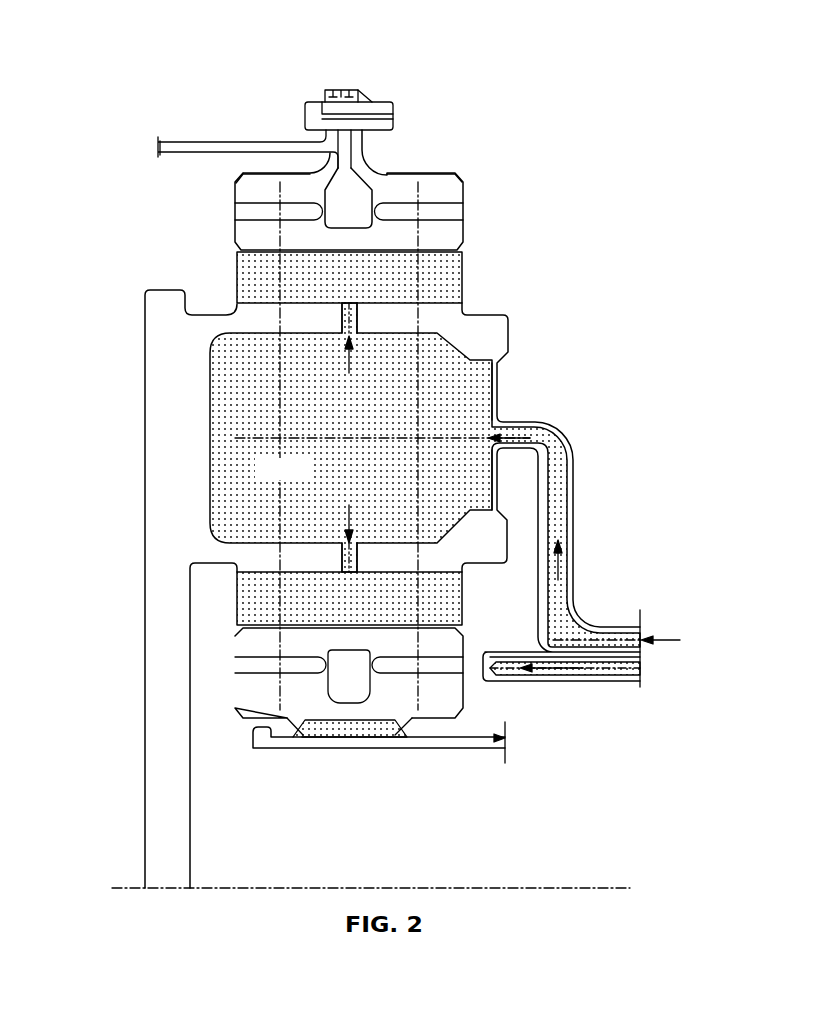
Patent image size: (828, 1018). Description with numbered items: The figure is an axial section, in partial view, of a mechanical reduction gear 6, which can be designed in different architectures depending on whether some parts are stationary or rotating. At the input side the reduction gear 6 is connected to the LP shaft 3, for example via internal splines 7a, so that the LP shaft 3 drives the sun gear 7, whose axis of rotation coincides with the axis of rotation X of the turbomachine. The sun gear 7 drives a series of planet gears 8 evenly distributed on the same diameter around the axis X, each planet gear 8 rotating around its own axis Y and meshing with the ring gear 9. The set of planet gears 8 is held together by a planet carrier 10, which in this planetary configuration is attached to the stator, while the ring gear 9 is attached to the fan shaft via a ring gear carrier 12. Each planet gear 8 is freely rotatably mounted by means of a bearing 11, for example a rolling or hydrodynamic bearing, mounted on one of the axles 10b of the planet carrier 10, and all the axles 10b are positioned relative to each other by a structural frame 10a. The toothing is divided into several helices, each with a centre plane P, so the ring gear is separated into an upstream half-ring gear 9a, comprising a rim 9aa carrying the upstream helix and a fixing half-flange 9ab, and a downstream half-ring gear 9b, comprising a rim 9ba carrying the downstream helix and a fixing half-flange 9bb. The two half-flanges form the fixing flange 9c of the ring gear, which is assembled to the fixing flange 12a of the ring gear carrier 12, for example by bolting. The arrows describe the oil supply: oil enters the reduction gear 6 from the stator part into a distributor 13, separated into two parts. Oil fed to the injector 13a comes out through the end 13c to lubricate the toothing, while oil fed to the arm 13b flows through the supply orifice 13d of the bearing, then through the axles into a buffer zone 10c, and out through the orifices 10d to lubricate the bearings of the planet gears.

The LP shaft 3 is at (470, 748).
The reduction gear 6 is at (597, 257).
The sun gear 7 is at (242, 683).
The internal splines 7a is at (325, 728).
The planet gears 8 is at (242, 650).
The ring gear 9 is at (463, 172).
The upstream half-ring gear 9a is at (248, 188).
The rim of the upstream half-ring gear 9aa is at (258, 182).
The fixing half-flange of the upstream half-ring gear 9ab is at (343, 90).
The downstream half-ring gear 9b is at (447, 195).
The rim of the downstream half-ring gear 9ba is at (407, 182).
The fixing half-flange of the downstream half-ring gear 9bb is at (363, 90).
The fixing flange of the ring gear 9c is at (407, 30).
The planet carrier 10 is at (491, 323).
The structural frame 10a is at (155, 391).
The axles 10b is at (520, 540).
The buffer zone 10c is at (425, 475).
The orifices 10d is at (357, 316).
The bearing 11 is at (455, 277).
The ring gear carrier 12 is at (195, 142).
The fixing flange of the ring gear carrier 12a is at (328, 91).
The distributor 13 is at (635, 591).
The injectors 13a is at (587, 676).
The arms 13b is at (567, 500).
The end of the injector 13c is at (484, 684).
The supply orifice of the bearing 13d is at (498, 367).
The centre plane P is at (277, 700).
The axis of rotation of the turbomachine X is at (582, 887).
The axis of the planet gear Y is at (472, 438).